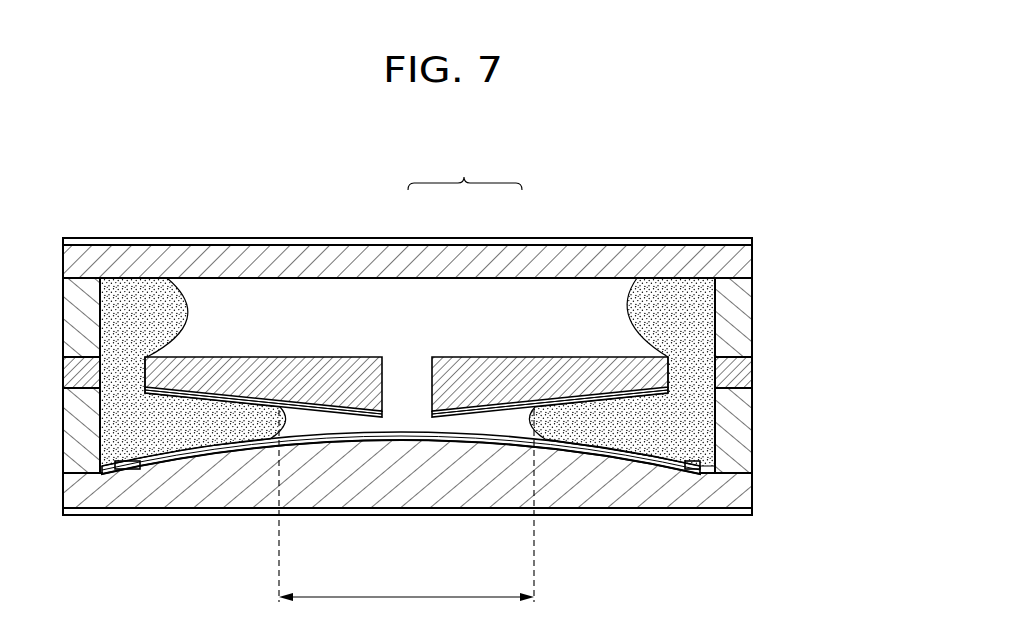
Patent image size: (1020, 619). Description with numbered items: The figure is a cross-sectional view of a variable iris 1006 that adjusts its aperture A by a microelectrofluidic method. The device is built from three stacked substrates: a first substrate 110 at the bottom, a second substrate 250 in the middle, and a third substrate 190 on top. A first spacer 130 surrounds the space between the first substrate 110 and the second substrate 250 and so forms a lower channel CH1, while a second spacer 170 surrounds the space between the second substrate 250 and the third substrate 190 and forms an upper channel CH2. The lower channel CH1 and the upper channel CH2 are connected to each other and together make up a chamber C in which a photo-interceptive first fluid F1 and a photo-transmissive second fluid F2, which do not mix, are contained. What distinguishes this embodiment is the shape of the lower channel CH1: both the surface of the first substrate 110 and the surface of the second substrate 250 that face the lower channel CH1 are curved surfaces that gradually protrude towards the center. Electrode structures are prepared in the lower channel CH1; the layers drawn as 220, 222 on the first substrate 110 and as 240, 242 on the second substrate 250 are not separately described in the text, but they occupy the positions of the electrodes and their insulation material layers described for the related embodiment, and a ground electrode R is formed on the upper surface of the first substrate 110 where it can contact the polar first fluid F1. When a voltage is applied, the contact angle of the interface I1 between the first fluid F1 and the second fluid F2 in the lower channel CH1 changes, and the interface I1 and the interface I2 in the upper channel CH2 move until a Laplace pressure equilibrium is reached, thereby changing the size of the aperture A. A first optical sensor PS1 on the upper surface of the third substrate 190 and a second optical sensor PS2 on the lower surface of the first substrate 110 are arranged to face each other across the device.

The variable iris 1006 is at (733, 215).
The first optical sensor PS1 is at (750, 243).
The third substrate 190 is at (738, 262).
The second spacer 170 is at (738, 327).
The second substrate 250 is at (750, 379).
The first spacer 130 is at (740, 427).
The first substrate 110 is at (740, 488).
The second optical sensor PS2 is at (752, 513).
The first fluid F1 is at (407, 372).
The second fluid F2 is at (408, 314).
The chamber C is at (465, 171).
The lower channel CH1 is at (472, 428).
The upper channel CH2 is at (507, 307).
The interface I2 is at (632, 305).
The interface I1 is at (533, 412).
The membrane 240 is at (170, 390).
The membrane electrode 242 is at (190, 403).
The lower electrode 220 is at (567, 450).
The upper electrode 222 is at (588, 450).
The ground electrode R is at (688, 469).
The aperture A is at (406, 506).